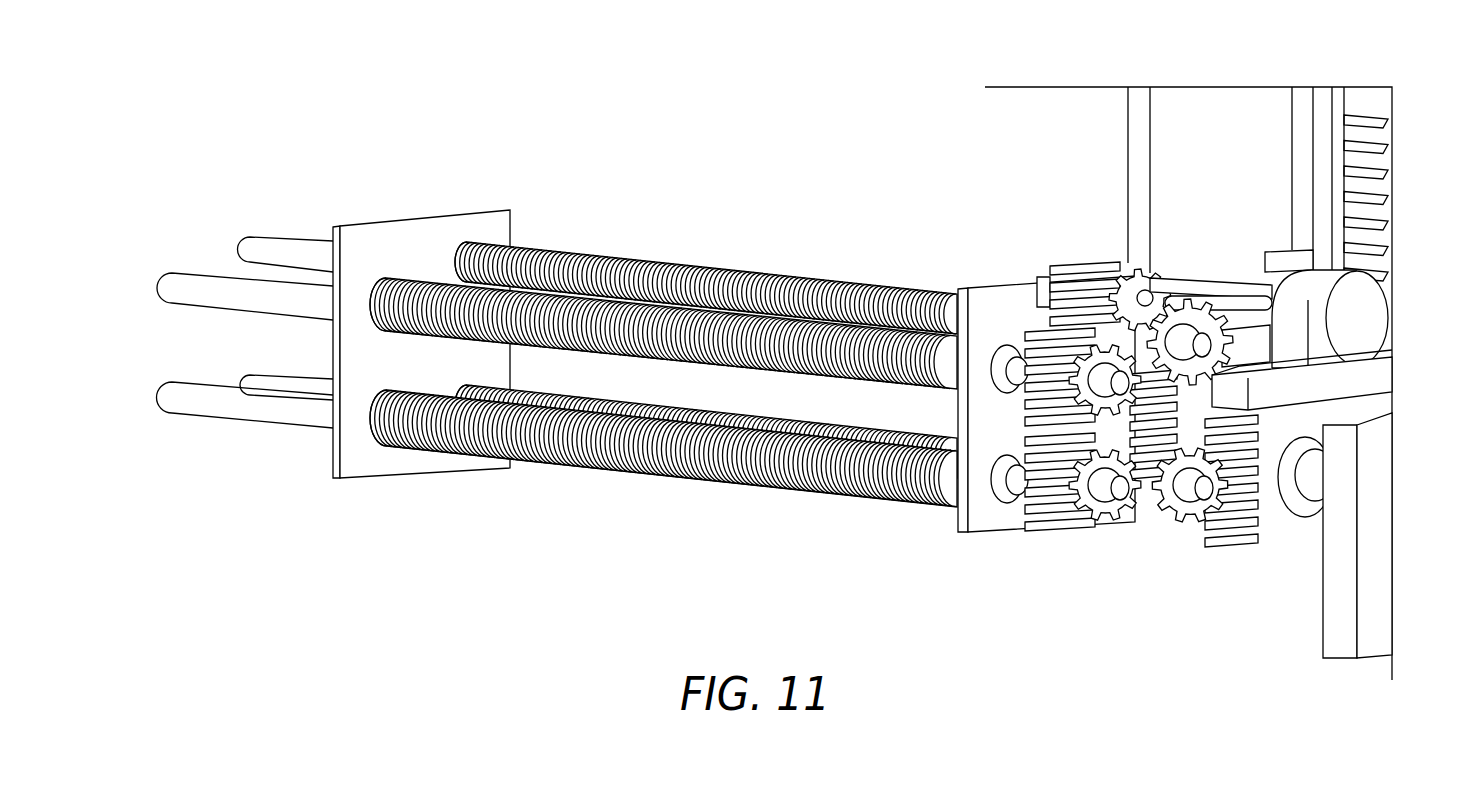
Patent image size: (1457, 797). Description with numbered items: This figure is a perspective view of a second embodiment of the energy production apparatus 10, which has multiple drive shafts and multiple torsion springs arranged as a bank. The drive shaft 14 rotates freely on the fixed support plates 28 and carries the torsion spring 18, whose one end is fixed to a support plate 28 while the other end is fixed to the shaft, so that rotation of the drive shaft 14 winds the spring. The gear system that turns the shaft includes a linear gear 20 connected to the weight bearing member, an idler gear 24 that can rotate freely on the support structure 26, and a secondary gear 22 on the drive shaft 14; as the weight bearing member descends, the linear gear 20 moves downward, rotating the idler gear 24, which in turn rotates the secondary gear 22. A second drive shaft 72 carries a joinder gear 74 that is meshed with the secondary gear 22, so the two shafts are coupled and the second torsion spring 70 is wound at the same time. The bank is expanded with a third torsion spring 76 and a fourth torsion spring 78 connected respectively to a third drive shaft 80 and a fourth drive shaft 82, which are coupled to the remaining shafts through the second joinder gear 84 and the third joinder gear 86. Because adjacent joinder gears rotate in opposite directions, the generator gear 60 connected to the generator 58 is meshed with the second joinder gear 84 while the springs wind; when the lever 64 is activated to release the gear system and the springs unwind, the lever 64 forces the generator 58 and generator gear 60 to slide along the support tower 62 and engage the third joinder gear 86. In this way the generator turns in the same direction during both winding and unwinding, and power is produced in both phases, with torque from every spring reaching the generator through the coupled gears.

The energy production apparatus 10 is at (281, 527).
The drive shaft 14 is at (256, 377).
The torsion spring 18 is at (768, 417).
The linear gear 20 is at (1377, 117).
The secondary gear 22 is at (1163, 538).
The idler gear 24 is at (1287, 530).
The support structure 26 is at (1192, 92).
The fixed support plate 28 is at (396, 218).
The generator 58 is at (1373, 305).
The generator gear 60 is at (1092, 277).
The support tower 62 is at (1373, 450).
The lever 64 is at (1323, 105).
The second torsion spring 70 is at (678, 479).
The second drive shaft 72 is at (172, 412).
The joinder gear 74 is at (1052, 530).
The third torsion spring 76 is at (625, 357).
The fourth torsion spring 78 is at (707, 265).
The third drive shaft 80 is at (180, 277).
The fourth drive shaft 82 is at (250, 236).
The second joinder gear 84 is at (1040, 352).
The third joinder gear 86 is at (1187, 320).